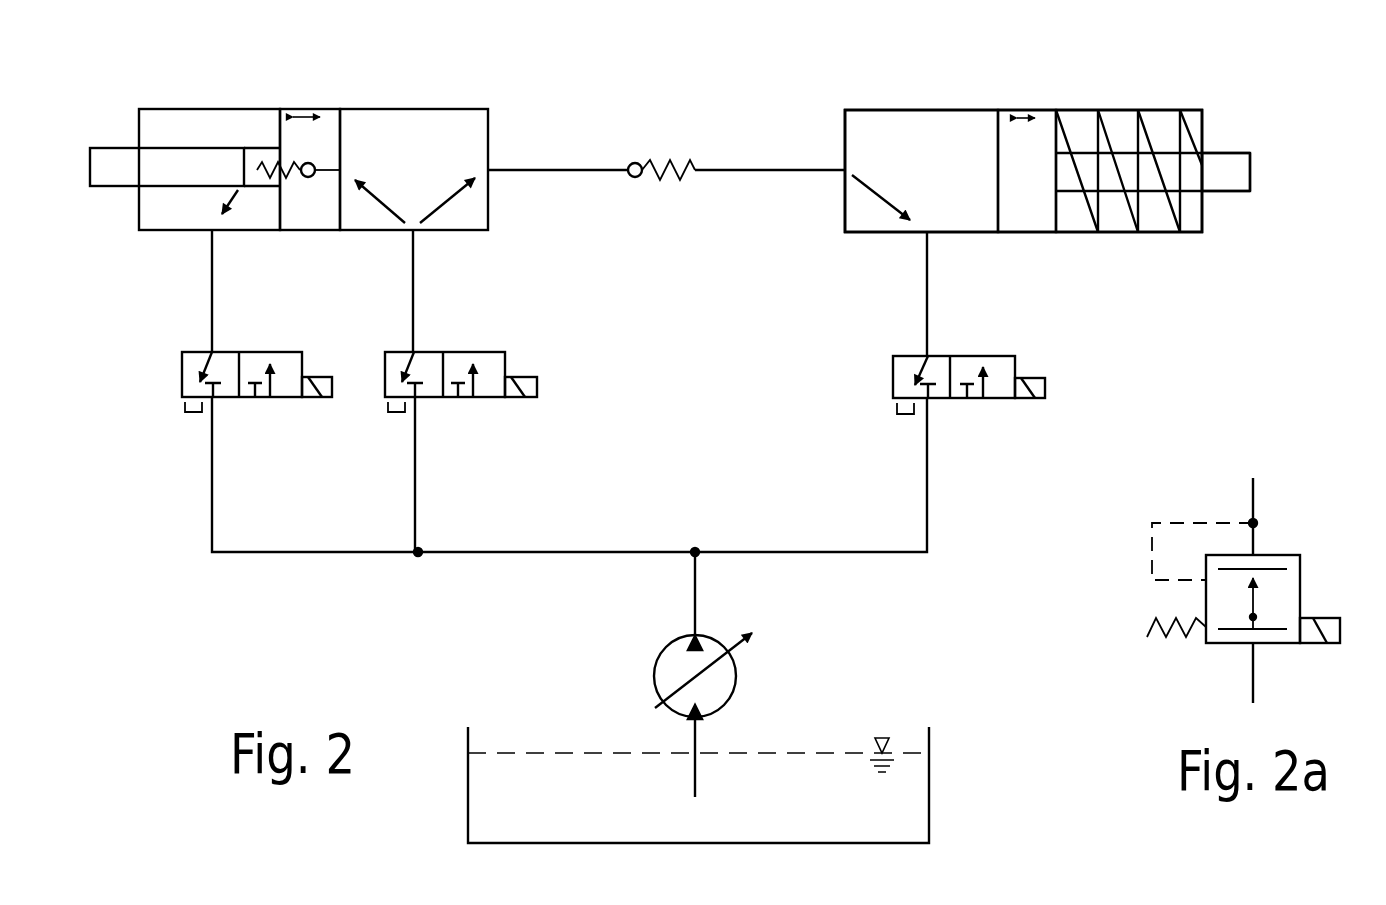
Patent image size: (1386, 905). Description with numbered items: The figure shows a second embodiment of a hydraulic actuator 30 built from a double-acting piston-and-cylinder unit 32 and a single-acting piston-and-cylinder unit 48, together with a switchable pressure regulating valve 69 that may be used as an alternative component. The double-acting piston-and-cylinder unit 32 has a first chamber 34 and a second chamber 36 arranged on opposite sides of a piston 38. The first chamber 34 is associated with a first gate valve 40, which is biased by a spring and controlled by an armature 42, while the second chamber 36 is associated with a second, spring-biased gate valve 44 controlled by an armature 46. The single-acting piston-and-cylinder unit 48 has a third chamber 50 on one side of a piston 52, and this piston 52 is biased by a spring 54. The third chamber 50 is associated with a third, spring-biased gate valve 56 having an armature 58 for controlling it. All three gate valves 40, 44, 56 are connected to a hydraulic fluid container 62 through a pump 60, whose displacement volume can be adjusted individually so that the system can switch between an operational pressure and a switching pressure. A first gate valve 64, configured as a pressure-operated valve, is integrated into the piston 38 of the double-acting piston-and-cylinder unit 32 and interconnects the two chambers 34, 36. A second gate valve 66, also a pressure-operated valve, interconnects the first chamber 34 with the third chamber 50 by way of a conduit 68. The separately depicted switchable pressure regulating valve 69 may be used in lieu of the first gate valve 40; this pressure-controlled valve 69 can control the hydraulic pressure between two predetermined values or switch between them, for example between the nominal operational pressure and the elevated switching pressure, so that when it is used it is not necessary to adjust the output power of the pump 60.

In FIG. 2, the hydraulic actuator 30 is at (1240, 110).
In FIG. 2, the double-acting piston-and-cylinder unit 32 is at (440, 105).
In FIG. 2, the first chamber 34 is at (480, 137).
In FIG. 2, the second chamber 36 is at (215, 127).
In FIG. 2, the piston 38 is at (333, 118).
In FIG. 2, the first gate valve 40 is at (490, 352).
In FIG. 2, the armature 42 is at (538, 377).
In FIG. 2, the second gate valve 44 is at (180, 363).
In FIG. 2, the armature 46 is at (312, 398).
In FIG. 2, the single-acting piston-and-cylinder unit 48 is at (963, 108).
In FIG. 2, the third chamber 50 is at (912, 128).
In FIG. 2, the piston 52 is at (1047, 127).
In FIG. 2, the spring 54 is at (1105, 123).
In FIG. 2, the third gate valve 56 is at (1000, 400).
In FIG. 2, the armature 58 is at (1048, 385).
In FIG. 2, the pump 60 is at (738, 683).
In FIG. 2, the hydraulic fluid container 62 is at (929, 798).
In FIG. 2, the first gate valve 64 is at (298, 190).
In FIG. 2, the second gate valve 66 is at (672, 166).
In FIG. 2, the conduit 68 is at (773, 166).
In FIG. 2A, the switchable pressure regulating valve 69 is at (1300, 570).